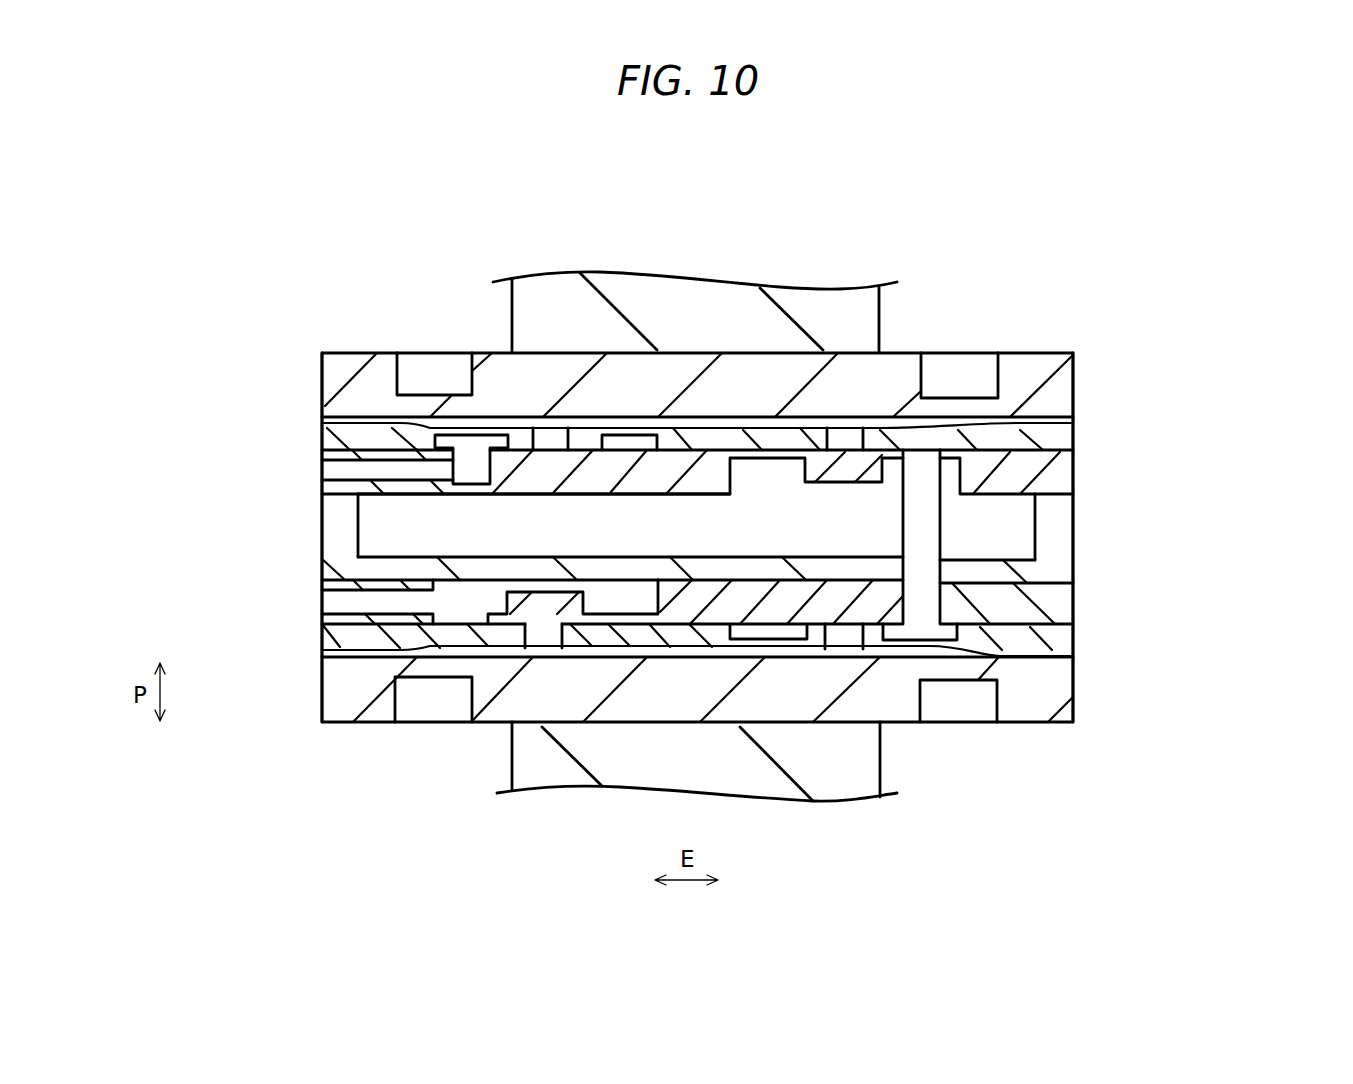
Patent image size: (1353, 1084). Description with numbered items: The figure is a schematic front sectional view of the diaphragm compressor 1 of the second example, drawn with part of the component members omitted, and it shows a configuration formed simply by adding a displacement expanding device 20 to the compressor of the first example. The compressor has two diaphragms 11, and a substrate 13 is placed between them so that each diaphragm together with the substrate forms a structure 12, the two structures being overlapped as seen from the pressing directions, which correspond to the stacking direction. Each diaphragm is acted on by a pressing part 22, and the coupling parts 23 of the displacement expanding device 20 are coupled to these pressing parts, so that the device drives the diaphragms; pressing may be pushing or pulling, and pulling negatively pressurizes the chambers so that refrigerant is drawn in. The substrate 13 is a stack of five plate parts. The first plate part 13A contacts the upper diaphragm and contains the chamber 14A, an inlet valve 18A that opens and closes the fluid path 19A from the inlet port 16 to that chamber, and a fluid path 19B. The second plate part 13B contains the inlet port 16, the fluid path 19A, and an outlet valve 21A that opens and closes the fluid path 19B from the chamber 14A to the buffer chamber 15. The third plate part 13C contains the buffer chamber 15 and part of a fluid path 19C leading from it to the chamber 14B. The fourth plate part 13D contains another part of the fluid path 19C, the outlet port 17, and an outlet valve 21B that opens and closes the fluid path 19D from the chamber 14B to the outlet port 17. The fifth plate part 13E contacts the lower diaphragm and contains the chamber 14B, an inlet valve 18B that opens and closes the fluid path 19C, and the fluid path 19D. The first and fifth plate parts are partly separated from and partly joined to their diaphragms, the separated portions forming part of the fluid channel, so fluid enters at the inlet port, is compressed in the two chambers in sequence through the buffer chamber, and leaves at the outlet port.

The diaphragm compressor 1 is at (1022, 352).
The diaphragm 11 is at (520, 368).
The structure 12 is at (261, 526).
The substrate 13 is at (311, 649).
The first plate part 13A is at (1063, 433).
The second plate part 13B is at (1063, 478).
The third plate part 13C is at (1063, 540).
The fourth plate part 13D is at (1063, 598).
The fifth plate part 13E is at (1063, 638).
The chamber 14A is at (632, 530).
The chamber 14B is at (636, 650).
The buffer chamber 15 is at (632, 530).
The inlet port 16 is at (378, 556).
The outlet port 17 is at (342, 607).
The inlet valve 18A is at (597, 437).
The inlet valve 18B is at (795, 635).
The fluid path 19A is at (495, 478).
The fluid path 19B is at (846, 440).
The fluid path 19C is at (935, 604).
The fluid path 19D is at (537, 632).
The outlet valve 21A is at (778, 456).
The outlet valve 21B is at (586, 609).
The pressing part 22 is at (882, 347).
The coupling part 23 is at (562, 302).
The displacement expanding device 20 is at (813, 766).